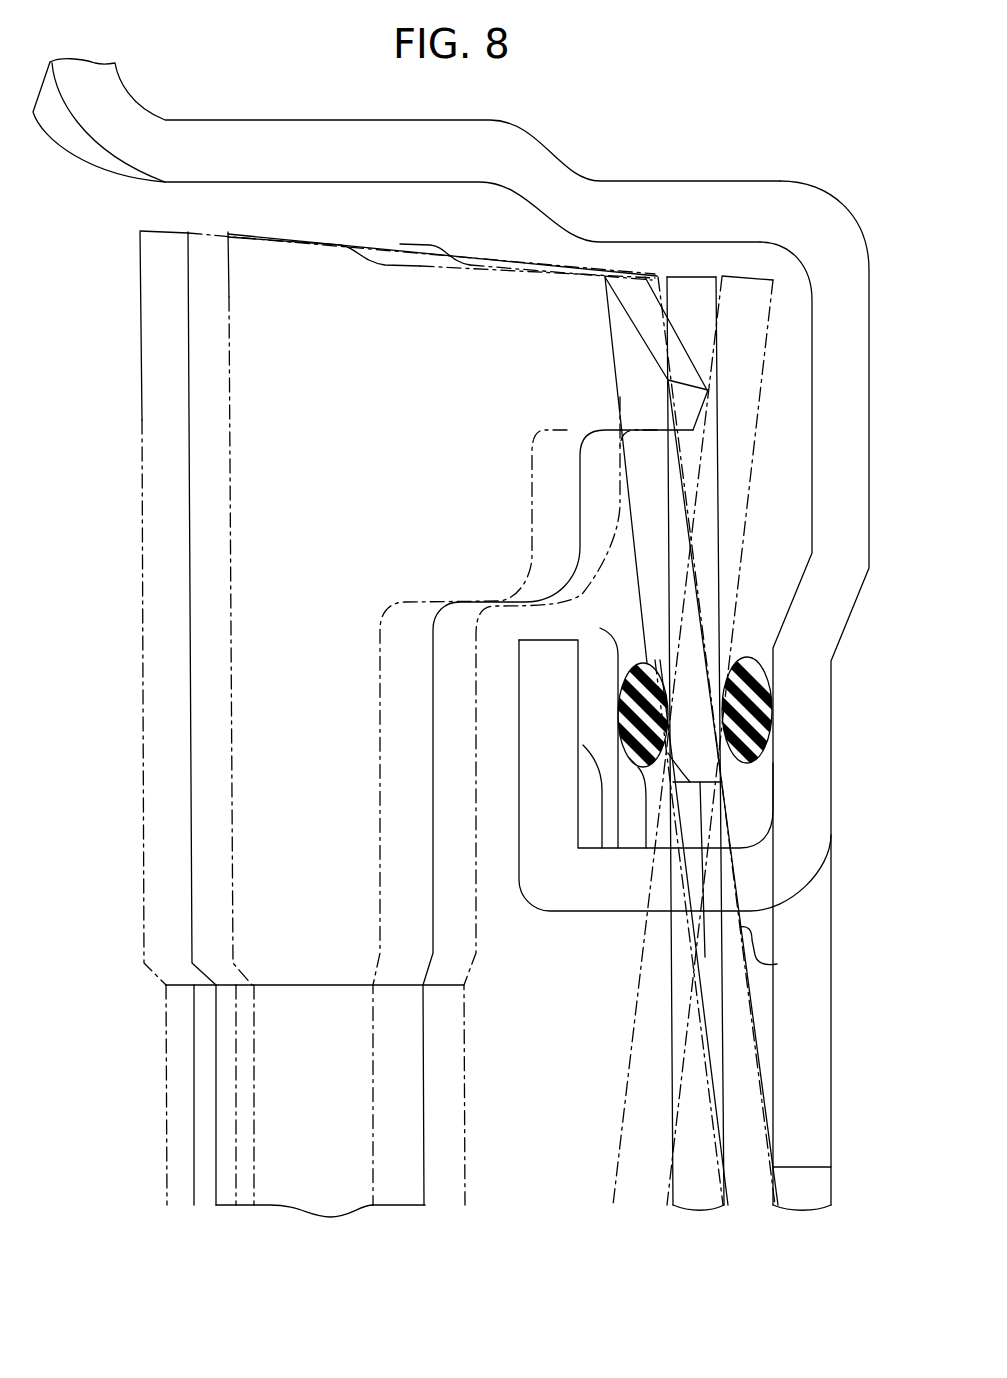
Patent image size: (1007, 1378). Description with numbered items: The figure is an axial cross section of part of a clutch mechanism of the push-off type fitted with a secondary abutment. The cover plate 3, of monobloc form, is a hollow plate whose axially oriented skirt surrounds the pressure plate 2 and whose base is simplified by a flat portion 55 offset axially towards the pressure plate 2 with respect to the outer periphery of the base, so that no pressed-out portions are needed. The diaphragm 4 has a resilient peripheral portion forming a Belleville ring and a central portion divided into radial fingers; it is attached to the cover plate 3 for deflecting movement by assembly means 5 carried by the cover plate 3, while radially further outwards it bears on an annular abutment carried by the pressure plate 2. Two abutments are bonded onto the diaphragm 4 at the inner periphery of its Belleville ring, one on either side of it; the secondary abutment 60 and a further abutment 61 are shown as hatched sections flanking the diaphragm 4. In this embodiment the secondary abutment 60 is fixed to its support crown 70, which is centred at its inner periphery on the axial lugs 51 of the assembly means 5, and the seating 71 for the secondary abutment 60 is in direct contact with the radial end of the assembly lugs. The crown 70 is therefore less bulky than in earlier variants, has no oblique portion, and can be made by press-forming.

The pressure plate 2 is at (300, 997).
The cover plate 3 is at (240, 116).
The diaphragm 4 is at (705, 274).
The assembly means 5 is at (544, 914).
The axial lugs 51 is at (777, 964).
The flat portion 55 is at (832, 754).
The secondary abutment 60 is at (647, 800).
The seal member 61 is at (747, 775).
The support crown 70 is at (622, 825).
The seating 71 is at (600, 743).